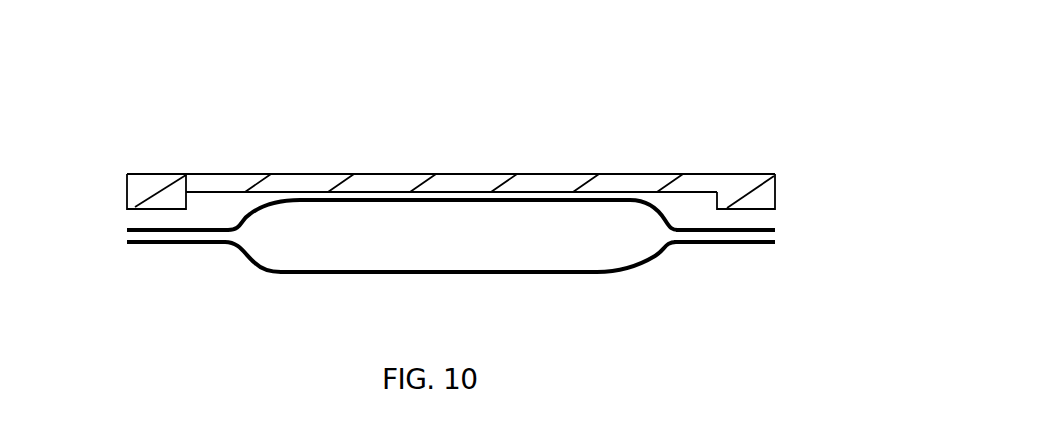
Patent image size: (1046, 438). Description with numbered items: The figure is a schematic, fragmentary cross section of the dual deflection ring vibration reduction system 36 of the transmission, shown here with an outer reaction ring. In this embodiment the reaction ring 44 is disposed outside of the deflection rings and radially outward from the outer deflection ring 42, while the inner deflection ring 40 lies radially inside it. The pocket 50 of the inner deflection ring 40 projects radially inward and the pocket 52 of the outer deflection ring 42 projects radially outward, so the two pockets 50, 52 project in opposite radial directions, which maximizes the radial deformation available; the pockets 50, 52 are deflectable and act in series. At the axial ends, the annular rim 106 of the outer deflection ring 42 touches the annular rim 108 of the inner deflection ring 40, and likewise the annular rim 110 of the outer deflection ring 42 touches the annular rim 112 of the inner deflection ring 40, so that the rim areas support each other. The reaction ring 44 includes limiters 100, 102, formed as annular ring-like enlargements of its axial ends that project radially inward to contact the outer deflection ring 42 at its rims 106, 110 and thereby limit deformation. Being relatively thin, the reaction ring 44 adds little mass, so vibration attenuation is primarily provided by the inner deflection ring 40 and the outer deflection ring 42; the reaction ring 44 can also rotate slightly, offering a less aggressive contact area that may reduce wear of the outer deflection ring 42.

The dual deflection ring vibration reduction system 36 is at (605, 135).
The reaction ring 44 is at (698, 186).
The limiter 100 is at (157, 187).
The limiter 102 is at (758, 197).
The annular rim 106 is at (177, 230).
The annular rim 108 is at (178, 245).
The annular rim 110 is at (723, 227).
The annular rim 112 is at (755, 243).
The outer deflection ring 42 is at (635, 200).
The inner deflection ring 40 is at (280, 273).
The pocket 52 is at (337, 200).
The pocket 50 is at (400, 271).